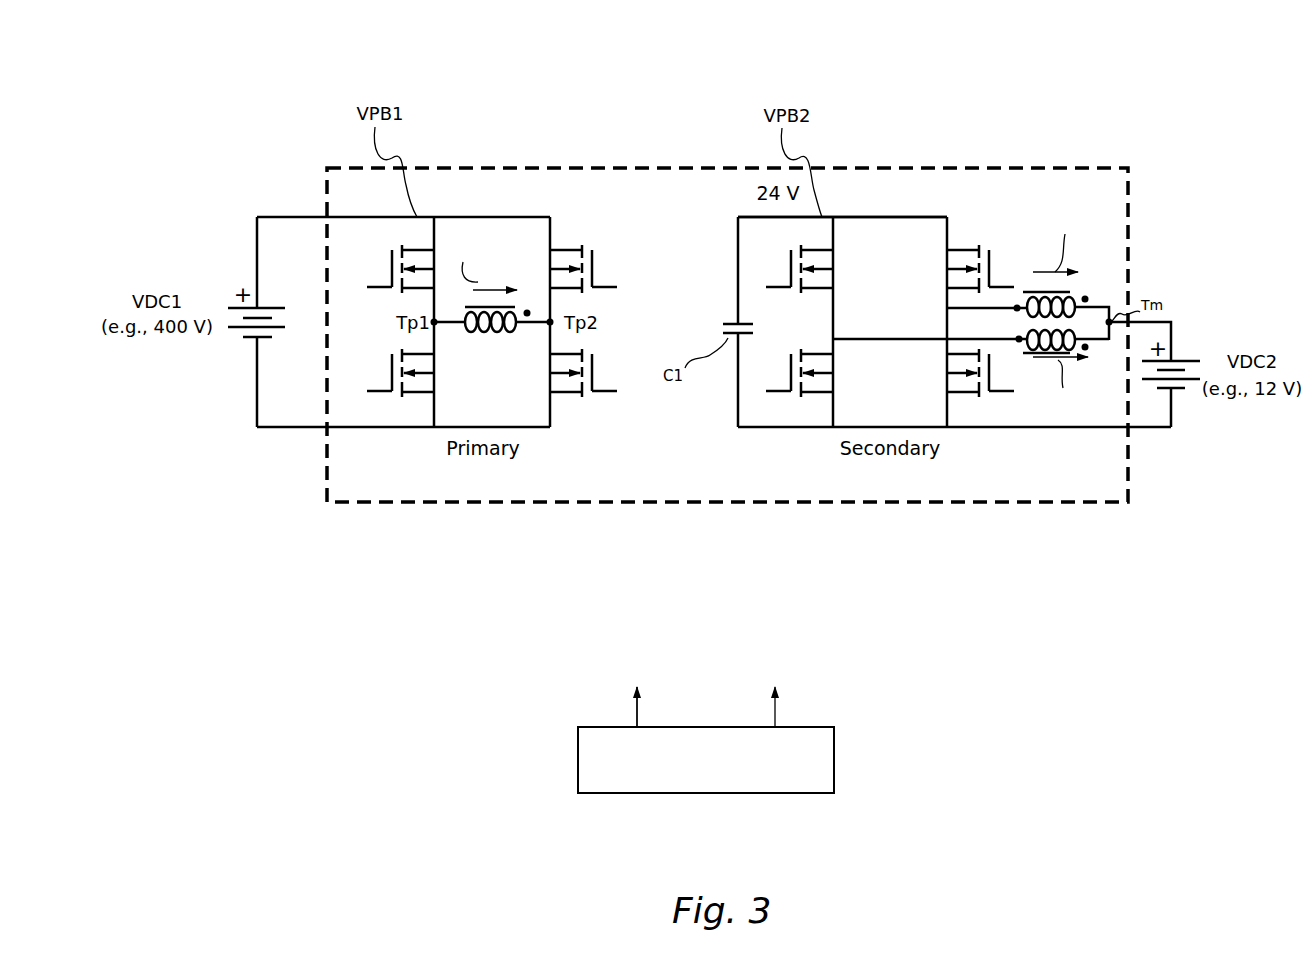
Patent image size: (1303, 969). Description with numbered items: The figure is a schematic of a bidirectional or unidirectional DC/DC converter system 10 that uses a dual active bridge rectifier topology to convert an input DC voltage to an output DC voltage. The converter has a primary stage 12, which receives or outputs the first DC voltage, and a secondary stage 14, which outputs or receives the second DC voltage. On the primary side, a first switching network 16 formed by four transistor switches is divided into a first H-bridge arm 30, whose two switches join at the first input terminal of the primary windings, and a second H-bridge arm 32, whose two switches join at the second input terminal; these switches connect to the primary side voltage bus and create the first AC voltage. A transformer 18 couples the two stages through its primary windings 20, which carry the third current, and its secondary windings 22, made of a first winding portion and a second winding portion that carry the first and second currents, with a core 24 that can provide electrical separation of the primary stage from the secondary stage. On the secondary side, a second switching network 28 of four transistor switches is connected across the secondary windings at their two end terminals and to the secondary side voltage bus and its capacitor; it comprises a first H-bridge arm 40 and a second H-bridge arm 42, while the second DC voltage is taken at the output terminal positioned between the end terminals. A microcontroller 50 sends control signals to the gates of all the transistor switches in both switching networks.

The DC/DC converter system 10 is at (1043, 82).
The primary stage 12 is at (464, 337).
The secondary stage 14 is at (886, 341).
The first switching network 16 is at (811, 291).
The transformer 18 is at (811, 338).
The primary windings 20 is at (500, 337).
The secondary windings 22 is at (1052, 297).
The core 24 is at (517, 307).
The second switching network 28 is at (867, 216).
The first H-bridge arm 30 is at (391, 473).
The second H-bridge arm 32 is at (573, 473).
The first H-bridge arm 40 is at (802, 473).
The second H-bridge arm 42 is at (965, 473).
The microcontroller 50 is at (834, 772).